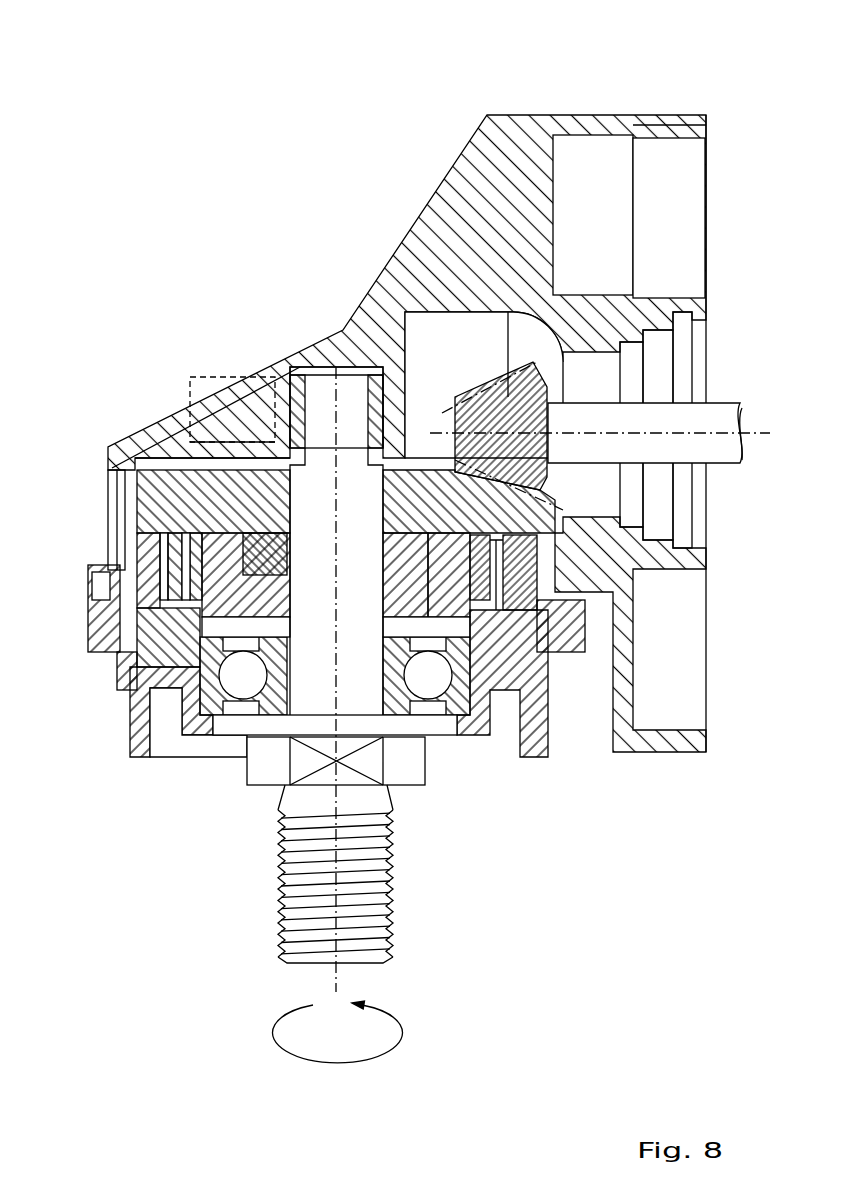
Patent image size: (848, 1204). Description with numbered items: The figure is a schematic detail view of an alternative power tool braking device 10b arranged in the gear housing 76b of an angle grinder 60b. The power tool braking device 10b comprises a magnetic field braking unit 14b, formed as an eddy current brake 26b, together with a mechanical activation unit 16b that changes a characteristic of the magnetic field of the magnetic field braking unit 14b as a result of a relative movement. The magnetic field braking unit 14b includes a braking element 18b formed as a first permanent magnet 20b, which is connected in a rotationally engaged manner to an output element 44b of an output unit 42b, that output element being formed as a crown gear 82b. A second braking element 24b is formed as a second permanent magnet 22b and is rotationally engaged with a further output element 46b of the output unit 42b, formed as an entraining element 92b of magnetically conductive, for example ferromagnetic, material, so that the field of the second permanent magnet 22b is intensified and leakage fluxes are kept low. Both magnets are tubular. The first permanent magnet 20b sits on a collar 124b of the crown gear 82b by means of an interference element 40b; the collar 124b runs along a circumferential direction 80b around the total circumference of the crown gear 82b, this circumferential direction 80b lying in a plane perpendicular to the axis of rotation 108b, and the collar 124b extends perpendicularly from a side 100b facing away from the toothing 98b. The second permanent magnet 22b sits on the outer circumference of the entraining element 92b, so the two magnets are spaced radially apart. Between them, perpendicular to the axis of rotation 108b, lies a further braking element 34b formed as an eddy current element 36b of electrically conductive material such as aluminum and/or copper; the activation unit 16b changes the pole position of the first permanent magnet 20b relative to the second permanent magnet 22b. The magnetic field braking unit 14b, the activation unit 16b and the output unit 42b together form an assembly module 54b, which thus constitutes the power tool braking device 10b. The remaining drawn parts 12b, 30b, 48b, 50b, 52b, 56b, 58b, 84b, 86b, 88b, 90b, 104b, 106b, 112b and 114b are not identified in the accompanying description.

The power tool braking device 10b is at (162, 144).
The drive unit 12b is at (667, 70).
The magnetic field braking unit 14b is at (100, 497).
The mechanical activation unit 16b is at (413, 426).
The braking element 18b is at (140, 445).
The first permanent magnet 20b is at (143, 452).
The second permanent magnet 22b is at (205, 642).
The braking element 24b is at (215, 670).
The eddy current brake 26b is at (100, 522).
The coupling element 30b is at (719, 345).
The further braking element 34b is at (180, 575).
The eddy current element 36b is at (185, 590).
The interference element 40b is at (160, 560).
The output unit 42b is at (122, 820).
The output element 44b is at (225, 545).
The output element 46b is at (140, 690).
The output side 48b is at (100, 795).
The blocking element 50b is at (228, 543).
The spring element 52b is at (160, 615).
The assembly module 54b is at (580, 795).
The drive shaft 56b is at (730, 466).
The shaft end 58b is at (706, 458).
The angle grinder 60b is at (675, 82).
The gear housing 76b is at (527, 126).
The circumferential direction 80b is at (335, 1063).
The crown gear 82b is at (125, 490).
The bevel pinion 84b is at (470, 350).
The threaded spindle section 86b is at (392, 919).
The bearing housing 88b is at (135, 750).
The bearing housing 90b is at (535, 718).
The entraining element 92b is at (150, 720).
The toothing 98b is at (165, 530).
The side 100b is at (200, 490).
The securing washer 104b is at (290, 490).
The spacer element 106b is at (392, 555).
The axis of rotation 108b is at (336, 989).
The spacer element 112b is at (480, 420).
The clamping element 114b is at (258, 482).
The collar 124b is at (132, 540).